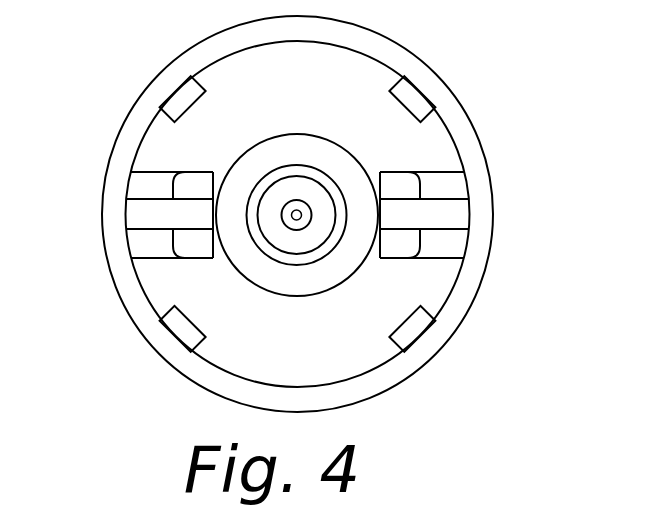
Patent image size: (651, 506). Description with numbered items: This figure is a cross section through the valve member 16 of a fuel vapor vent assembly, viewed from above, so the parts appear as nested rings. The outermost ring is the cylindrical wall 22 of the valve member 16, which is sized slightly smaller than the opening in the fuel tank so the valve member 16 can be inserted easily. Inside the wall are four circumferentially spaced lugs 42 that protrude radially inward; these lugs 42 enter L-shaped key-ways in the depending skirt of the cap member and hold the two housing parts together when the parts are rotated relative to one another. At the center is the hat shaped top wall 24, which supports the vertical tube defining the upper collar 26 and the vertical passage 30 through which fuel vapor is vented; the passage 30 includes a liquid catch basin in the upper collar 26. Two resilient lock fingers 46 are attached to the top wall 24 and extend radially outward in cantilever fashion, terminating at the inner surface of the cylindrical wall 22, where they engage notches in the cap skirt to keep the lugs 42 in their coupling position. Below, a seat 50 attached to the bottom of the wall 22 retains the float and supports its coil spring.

The valve member 16 is at (113, 290).
The cylindrical wall 22 is at (120, 127).
The hat shaped top wall 24 is at (305, 298).
The upper collar 26 is at (312, 187).
The vertical passage 30 is at (290, 209).
The lugs 42 is at (176, 95).
The lock fingers 46 is at (140, 214).
The seat 50 is at (138, 183).